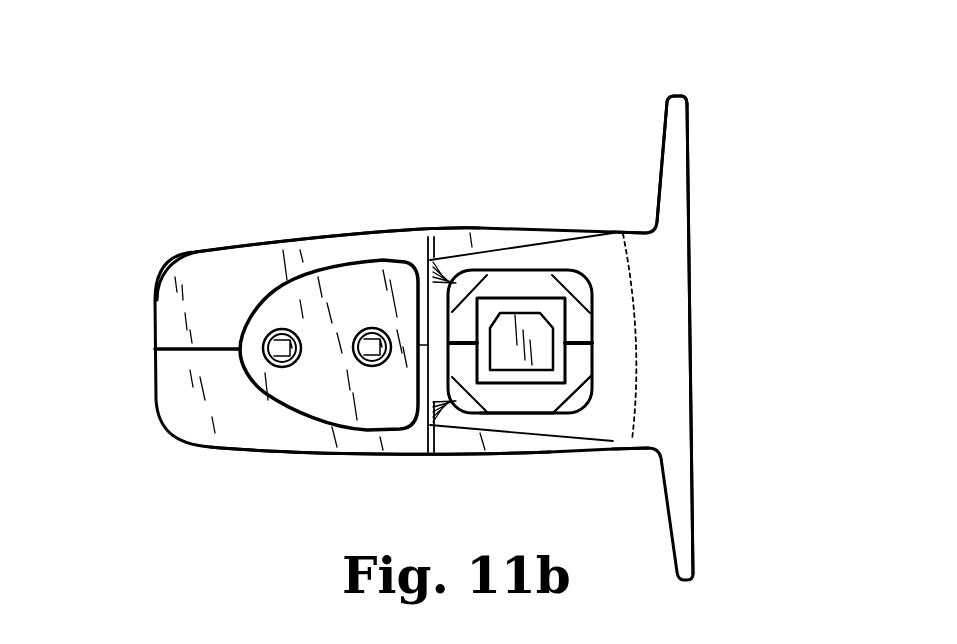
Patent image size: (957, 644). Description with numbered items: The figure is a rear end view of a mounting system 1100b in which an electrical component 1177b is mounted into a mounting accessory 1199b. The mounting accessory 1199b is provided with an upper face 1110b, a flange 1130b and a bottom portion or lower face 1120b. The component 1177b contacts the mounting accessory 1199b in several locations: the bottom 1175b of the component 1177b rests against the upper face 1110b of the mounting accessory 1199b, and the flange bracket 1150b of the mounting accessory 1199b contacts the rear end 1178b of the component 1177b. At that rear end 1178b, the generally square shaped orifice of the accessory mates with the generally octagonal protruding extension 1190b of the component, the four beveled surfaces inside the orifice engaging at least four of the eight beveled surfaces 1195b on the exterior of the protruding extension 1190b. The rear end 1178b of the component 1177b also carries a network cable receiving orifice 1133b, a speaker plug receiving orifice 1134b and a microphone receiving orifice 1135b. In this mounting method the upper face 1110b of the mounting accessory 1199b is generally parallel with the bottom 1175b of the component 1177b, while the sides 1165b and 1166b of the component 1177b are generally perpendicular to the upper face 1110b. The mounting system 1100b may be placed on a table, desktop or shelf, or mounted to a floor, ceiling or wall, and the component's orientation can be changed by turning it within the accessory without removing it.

The mounting system 1100b is at (252, 170).
The upper face 1110b is at (662, 140).
The lower face 1120b is at (688, 158).
The flange 1130b is at (676, 96).
The network cable receiving orifice 1133b is at (507, 300).
The speaker plug receiving orifice 1134b is at (270, 335).
The microphone receiving orifice 1135b is at (375, 366).
The flange bracket 1150b is at (607, 260).
The side 1165b is at (290, 455).
The side 1166b is at (322, 234).
The bottom 1175b is at (638, 312).
The electrical component 1177b is at (200, 273).
The rear end 1178b is at (370, 250).
The protruding extension 1190b is at (537, 393).
The beveled surfaces 1195b is at (567, 377).
The mounting accessory 1199b is at (623, 360).